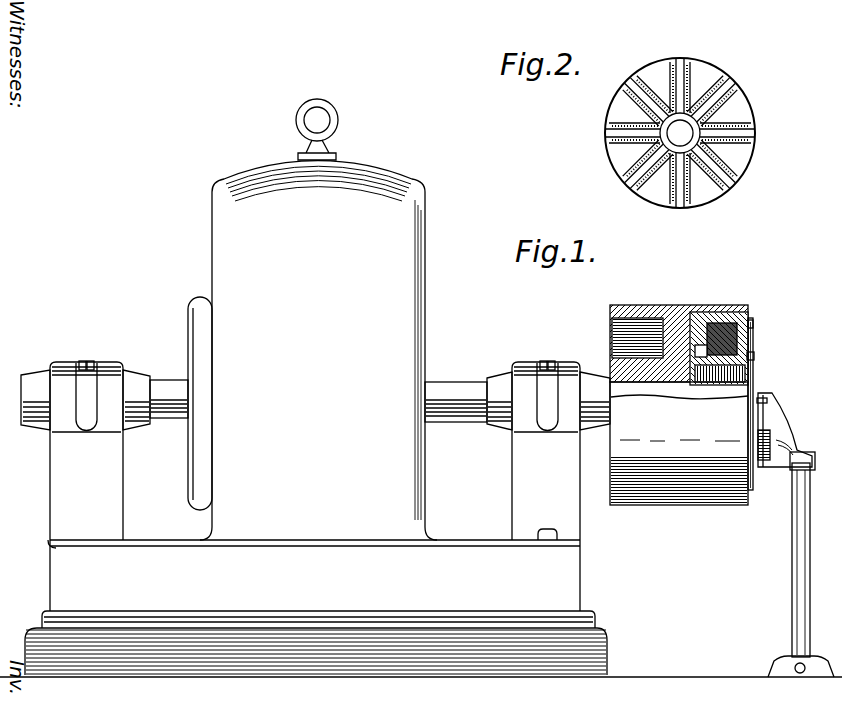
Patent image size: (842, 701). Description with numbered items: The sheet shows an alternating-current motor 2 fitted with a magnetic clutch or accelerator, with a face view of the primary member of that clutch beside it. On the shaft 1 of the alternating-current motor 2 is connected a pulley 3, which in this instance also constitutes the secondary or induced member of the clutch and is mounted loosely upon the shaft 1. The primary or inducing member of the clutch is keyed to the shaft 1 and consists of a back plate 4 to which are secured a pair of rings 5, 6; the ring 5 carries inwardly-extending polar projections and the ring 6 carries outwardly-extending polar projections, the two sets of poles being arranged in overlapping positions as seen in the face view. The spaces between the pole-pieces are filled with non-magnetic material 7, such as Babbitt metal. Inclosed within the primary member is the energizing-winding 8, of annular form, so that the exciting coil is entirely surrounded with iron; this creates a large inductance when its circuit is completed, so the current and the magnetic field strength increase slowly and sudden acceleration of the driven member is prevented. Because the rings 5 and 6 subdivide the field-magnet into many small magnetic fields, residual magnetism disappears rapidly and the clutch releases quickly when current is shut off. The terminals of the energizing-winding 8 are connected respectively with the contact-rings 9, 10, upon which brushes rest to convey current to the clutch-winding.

In FIG. 1, the shaft 1 is at (449, 392).
In FIG. 1, the alternating-current motor 2 is at (405, 180).
In FIG. 1, the pulley 3 is at (660, 306).
In FIG. 1, the back plate 4 is at (753, 318).
In FIG. 1, the ring 5 is at (698, 320).
In FIG. 1, the ring 6 is at (712, 370).
In FIG. 2, the non-magnetic material 7 is at (724, 82).
In FIG. 1, the energizing-winding 8 is at (736, 340).
In FIG. 1, the contact-ring 9 is at (753, 322).
In FIG. 1, the contact-ring 10 is at (754, 356).